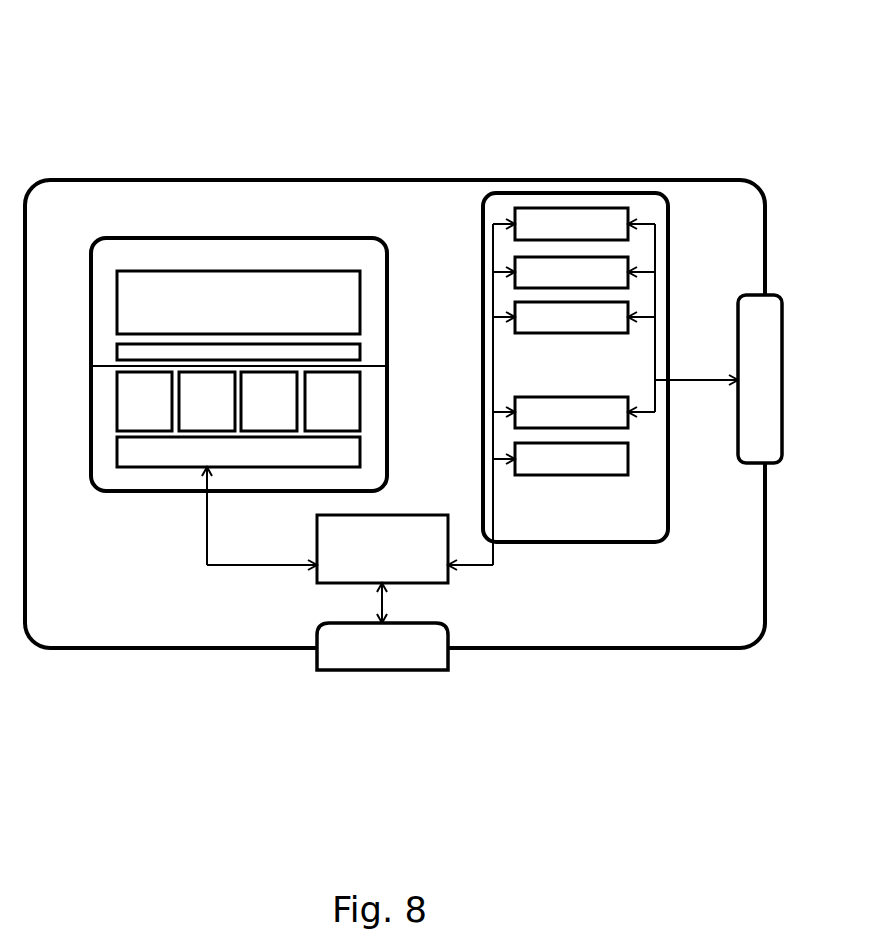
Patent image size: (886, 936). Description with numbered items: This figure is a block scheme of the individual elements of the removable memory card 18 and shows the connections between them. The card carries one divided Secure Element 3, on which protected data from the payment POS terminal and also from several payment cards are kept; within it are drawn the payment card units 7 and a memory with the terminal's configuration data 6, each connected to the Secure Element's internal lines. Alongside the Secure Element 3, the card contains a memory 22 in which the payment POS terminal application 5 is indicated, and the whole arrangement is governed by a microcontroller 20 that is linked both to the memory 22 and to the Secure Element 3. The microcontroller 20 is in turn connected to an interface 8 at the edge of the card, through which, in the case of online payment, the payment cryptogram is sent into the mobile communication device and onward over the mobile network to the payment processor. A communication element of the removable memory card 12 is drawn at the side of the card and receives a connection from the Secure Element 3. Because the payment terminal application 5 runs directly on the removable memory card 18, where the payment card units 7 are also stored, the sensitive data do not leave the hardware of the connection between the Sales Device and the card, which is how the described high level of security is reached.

The removable memory card 18 is at (65, 213).
The memory 22 is at (125, 253).
The payment POS terminal application 5 is at (223, 409).
The microcontroller 20 is at (357, 565).
The interface 8 is at (388, 640).
The Secure Element 3 is at (493, 205).
The payment card unit 7 is at (548, 275).
The memory with terminal's configuration data 6 is at (557, 317).
The communication element of the removable memory card 12 is at (748, 333).